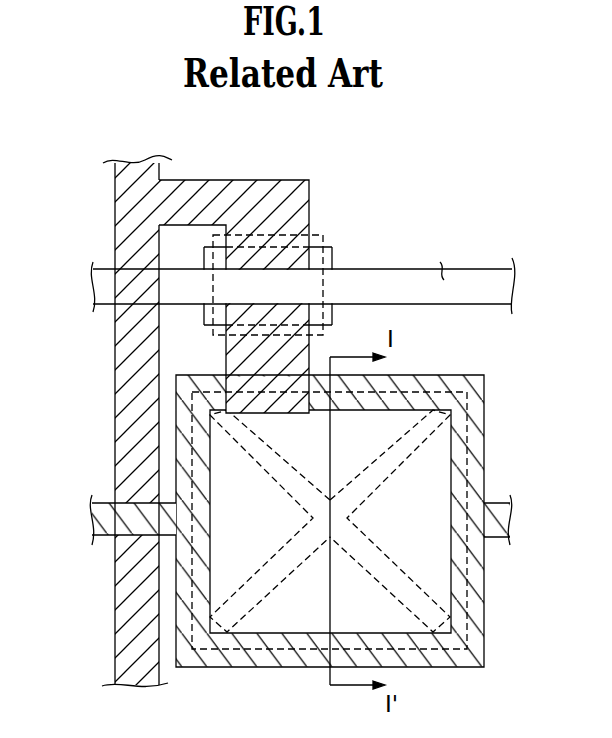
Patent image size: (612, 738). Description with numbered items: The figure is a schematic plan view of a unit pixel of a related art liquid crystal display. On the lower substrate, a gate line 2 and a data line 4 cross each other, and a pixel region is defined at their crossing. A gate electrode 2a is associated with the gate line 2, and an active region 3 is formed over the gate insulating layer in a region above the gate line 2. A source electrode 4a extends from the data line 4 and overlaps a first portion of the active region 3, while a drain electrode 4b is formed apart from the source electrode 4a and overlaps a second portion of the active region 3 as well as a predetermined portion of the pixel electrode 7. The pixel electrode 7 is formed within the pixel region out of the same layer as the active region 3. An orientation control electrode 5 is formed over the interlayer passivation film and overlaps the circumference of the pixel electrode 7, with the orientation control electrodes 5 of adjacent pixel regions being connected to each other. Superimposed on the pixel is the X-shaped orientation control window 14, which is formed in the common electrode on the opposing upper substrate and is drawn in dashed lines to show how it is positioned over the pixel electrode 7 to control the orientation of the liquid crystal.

The gate line 2 is at (303, 269).
The gate electrode 2a is at (326, 256).
The active region 3 is at (322, 288).
The data line 4 is at (122, 412).
The source electrode 4a is at (283, 250).
The drain electrode 4b is at (300, 358).
The orientation control electrode 5 is at (452, 375).
The pixel electrode 7 is at (470, 413).
The orientation control window 14 is at (403, 457).